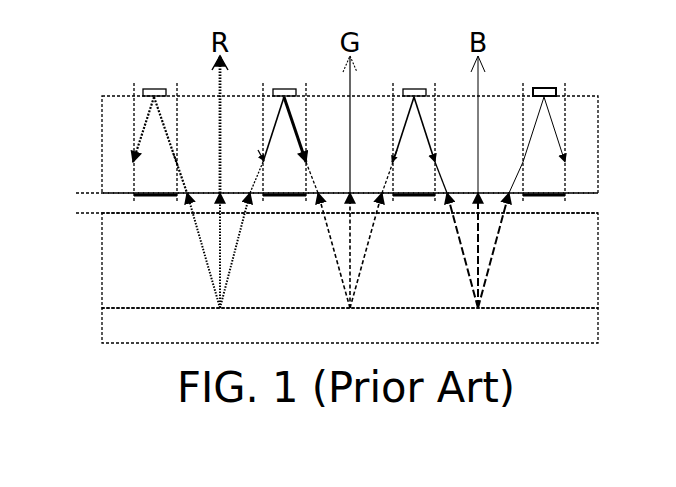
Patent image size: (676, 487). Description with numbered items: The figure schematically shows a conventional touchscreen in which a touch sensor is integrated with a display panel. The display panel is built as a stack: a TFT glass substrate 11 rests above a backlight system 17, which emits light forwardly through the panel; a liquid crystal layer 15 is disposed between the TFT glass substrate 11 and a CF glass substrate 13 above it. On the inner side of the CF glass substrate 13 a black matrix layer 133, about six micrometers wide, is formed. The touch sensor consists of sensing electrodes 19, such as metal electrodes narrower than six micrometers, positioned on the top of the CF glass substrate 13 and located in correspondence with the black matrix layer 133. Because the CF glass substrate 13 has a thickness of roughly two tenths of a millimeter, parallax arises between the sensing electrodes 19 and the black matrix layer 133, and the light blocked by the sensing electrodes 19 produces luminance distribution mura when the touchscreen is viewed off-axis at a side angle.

The TFT glass substrate 11 is at (113, 267).
The CF glass substrate 13 is at (117, 144).
The black matrix layer 133 is at (150, 192).
The liquid crystal layer 15 is at (76, 193).
The backlight system 17 is at (113, 327).
The sensing electrodes 19 is at (154, 82).